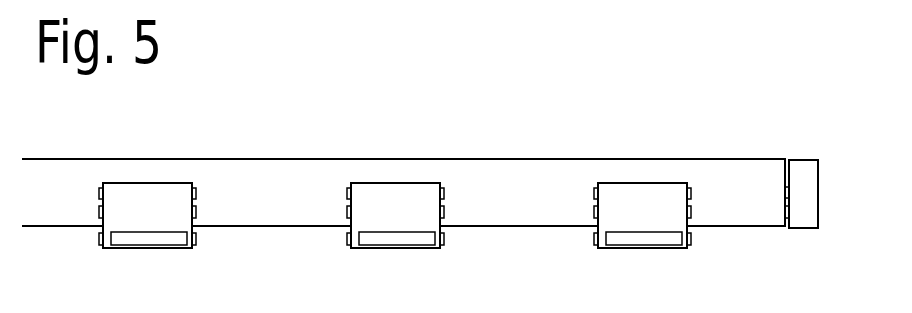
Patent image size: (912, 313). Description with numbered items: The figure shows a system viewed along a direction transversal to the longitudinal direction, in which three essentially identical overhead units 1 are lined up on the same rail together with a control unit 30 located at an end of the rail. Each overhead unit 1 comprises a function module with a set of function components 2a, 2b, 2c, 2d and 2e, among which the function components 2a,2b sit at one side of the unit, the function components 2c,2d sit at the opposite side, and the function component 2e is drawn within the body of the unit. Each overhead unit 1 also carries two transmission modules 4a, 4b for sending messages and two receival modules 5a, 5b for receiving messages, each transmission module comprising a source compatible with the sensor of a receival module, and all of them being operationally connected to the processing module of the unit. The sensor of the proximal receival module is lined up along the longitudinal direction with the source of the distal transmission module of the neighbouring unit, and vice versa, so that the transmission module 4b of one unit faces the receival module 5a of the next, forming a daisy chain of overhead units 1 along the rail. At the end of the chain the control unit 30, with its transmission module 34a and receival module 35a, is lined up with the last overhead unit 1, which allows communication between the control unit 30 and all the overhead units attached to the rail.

The overhead unit 1 is at (149, 197).
The function components 2a,2b is at (311, 254).
The function component 2a is at (101, 239).
The function component 2b is at (100, 237).
The function components 2c,2d is at (482, 245).
The function component 2c is at (194, 239).
The function component 2d is at (197, 237).
The function component 2e is at (148, 240).
The transmission module 4a is at (99, 190).
The transmission module 4b is at (197, 215).
The receival module 5a is at (99, 211).
The receival module 5b is at (197, 197).
The control unit 30 is at (802, 196).
The transmission module 34a is at (784, 190).
The receival module 35a is at (790, 217).